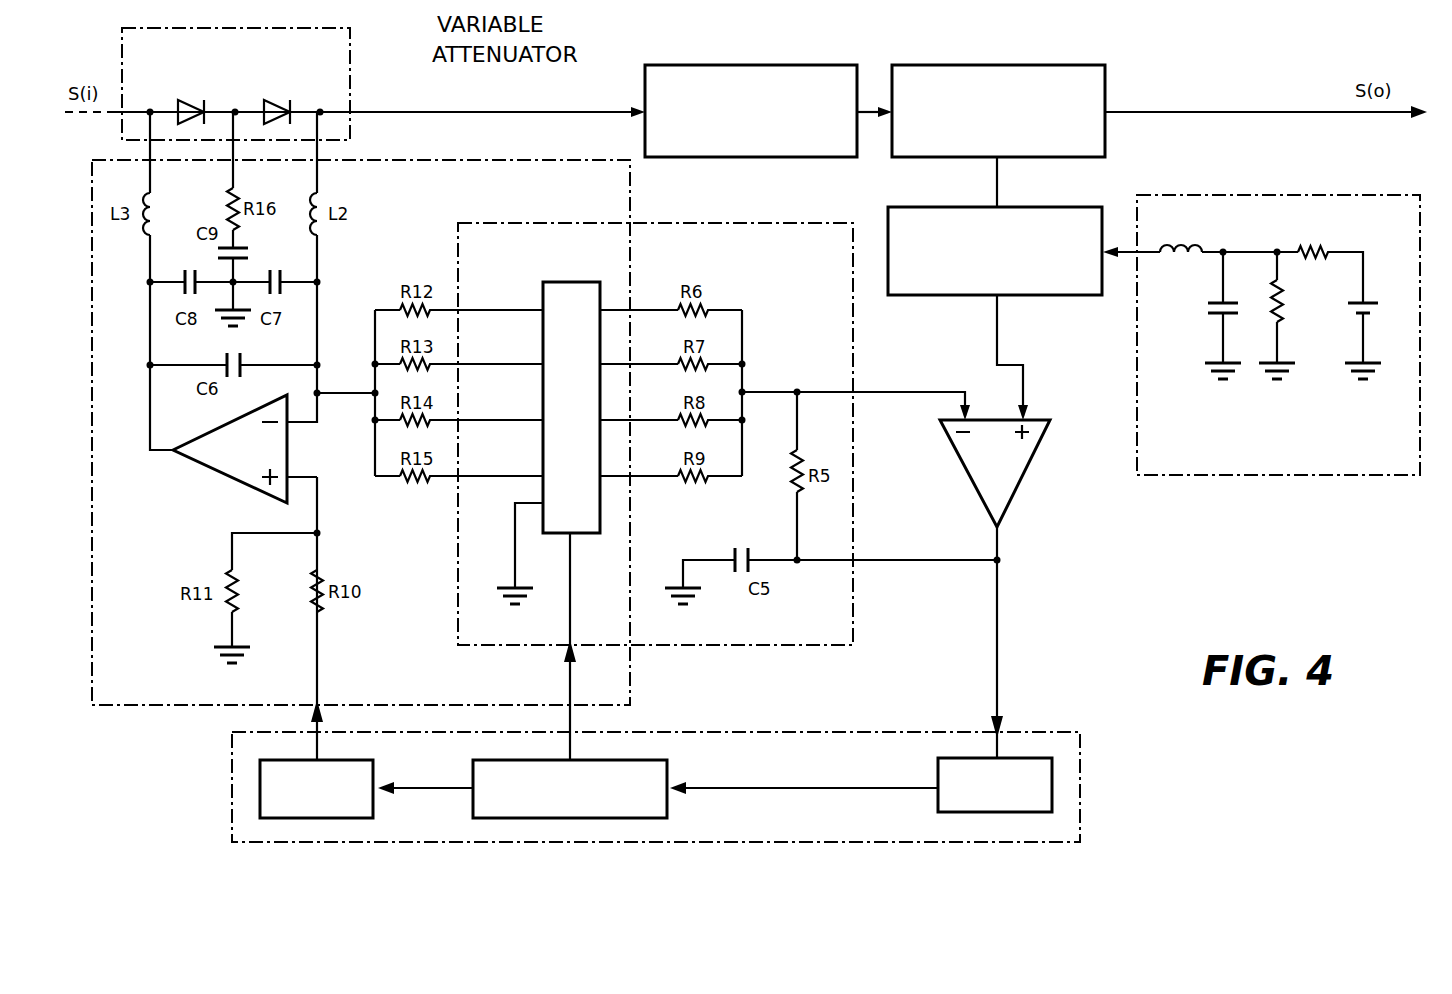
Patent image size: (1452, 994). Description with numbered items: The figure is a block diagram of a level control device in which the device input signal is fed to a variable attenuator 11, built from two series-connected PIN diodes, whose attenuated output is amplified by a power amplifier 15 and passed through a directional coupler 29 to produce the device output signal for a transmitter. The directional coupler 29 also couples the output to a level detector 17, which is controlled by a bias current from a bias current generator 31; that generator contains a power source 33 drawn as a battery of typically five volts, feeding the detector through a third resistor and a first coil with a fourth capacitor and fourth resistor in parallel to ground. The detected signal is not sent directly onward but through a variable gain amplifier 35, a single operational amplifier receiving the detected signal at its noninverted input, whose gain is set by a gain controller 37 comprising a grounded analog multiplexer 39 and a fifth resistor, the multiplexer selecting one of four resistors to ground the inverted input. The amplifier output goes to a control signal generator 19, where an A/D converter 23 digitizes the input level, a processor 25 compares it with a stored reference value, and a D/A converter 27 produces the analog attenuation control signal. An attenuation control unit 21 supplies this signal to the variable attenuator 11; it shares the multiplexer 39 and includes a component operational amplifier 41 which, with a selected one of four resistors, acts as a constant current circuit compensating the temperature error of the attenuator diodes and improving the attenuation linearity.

The variable attenuator 11 is at (352, 50).
The power amplifier 15 is at (820, 65).
The level detector 17 is at (906, 296).
The control signal generator 19 is at (232, 782).
The attenuation control unit 21 is at (118, 705).
The A/D converter 23 is at (1053, 796).
The processor 25 is at (520, 818).
The D/A converter 27 is at (260, 796).
The directional coupler 29 is at (960, 65).
The bias current generator 31 is at (1170, 476).
The power source 33 is at (1368, 300).
The variable gain amplifier 35 is at (1018, 498).
The gain controller 37 is at (853, 603).
The analog multiplexer 39 is at (550, 282).
The component operational amplifier 41 is at (218, 473).